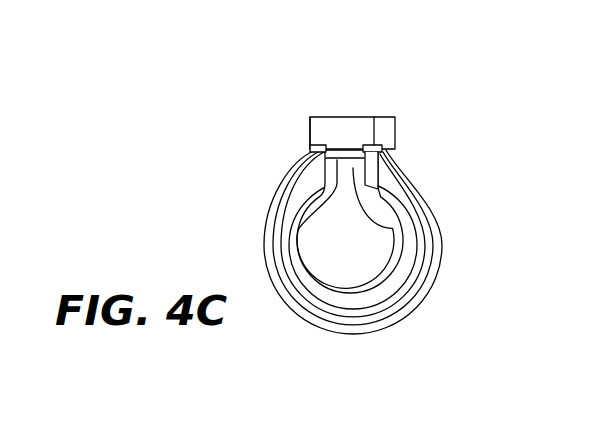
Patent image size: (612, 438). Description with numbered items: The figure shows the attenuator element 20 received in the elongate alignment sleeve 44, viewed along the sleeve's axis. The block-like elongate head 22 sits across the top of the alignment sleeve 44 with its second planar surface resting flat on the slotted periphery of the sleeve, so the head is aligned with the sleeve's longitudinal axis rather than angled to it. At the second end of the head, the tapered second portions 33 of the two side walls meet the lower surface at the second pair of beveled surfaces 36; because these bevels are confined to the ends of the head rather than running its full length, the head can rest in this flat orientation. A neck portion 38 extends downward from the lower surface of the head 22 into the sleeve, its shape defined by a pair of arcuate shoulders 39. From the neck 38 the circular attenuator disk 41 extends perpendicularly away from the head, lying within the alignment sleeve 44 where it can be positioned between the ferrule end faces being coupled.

The attenuator element 20 is at (388, 100).
The elongate head 22 is at (345, 128).
The second portion of side wall 33 is at (311, 130).
The second pair of beveled surfaces 36 is at (322, 149).
The neck portion 38 is at (394, 233).
The arcuate shoulders 39 is at (297, 235).
The attenuator disk 41 is at (357, 255).
The alignment sleeve 44 is at (437, 193).